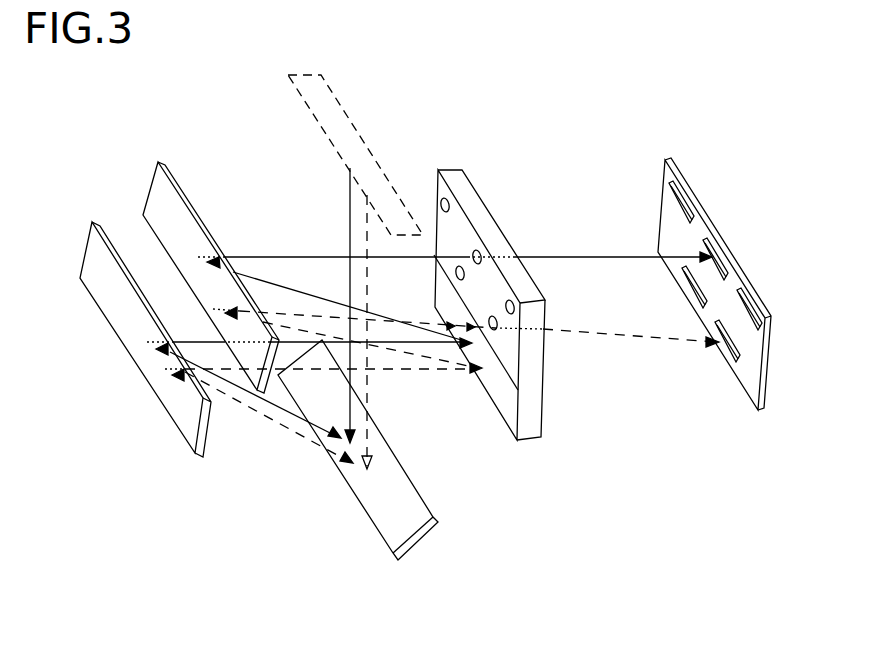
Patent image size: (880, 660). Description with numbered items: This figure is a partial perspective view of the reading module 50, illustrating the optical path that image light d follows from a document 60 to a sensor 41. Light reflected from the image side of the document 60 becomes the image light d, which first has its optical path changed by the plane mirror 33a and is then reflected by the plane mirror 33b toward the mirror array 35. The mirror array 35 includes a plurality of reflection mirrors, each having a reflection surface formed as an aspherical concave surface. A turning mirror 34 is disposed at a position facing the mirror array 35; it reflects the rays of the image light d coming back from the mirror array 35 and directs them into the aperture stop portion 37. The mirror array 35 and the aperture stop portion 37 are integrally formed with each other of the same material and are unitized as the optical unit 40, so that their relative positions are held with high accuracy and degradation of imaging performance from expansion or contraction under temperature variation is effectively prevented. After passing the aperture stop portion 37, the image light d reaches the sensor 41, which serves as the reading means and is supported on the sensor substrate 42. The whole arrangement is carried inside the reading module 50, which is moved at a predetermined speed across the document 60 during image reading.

The plane mirror 33a is at (422, 538).
The plane mirror 33b is at (145, 382).
The turning mirror 34 is at (158, 200).
The mirror array 35 is at (512, 408).
The aperture stop portion 37 is at (492, 330).
The optical unit 40 is at (489, 354).
The sensor 41 is at (722, 350).
The sensor substrate 42 is at (683, 173).
The reading module 50 is at (727, 246).
The document 60 is at (357, 132).
The image light d is at (367, 232).